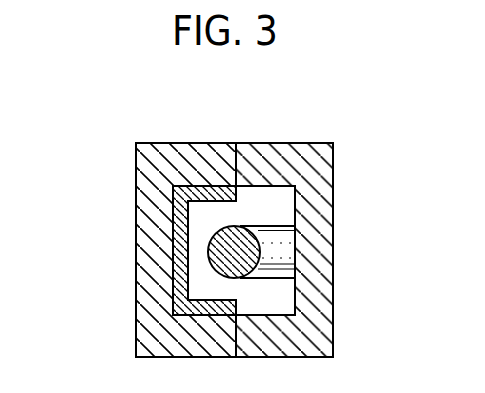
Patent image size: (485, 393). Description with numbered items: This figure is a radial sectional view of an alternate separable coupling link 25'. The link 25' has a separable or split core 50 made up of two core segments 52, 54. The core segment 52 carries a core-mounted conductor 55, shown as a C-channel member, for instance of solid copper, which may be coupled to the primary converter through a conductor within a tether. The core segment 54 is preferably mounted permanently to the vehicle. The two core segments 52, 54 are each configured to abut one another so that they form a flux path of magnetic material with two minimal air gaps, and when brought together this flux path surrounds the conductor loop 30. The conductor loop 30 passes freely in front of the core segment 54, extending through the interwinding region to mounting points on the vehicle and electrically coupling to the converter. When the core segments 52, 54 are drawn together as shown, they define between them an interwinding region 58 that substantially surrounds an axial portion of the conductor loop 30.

The link 25' is at (218, 218).
The conductor loop 30 is at (236, 243).
The split core 50 is at (231, 218).
The core segment 52 is at (148, 183).
The core segment 54 is at (331, 168).
The core-mounted conductor 55 is at (175, 300).
The interwinding region 58 is at (245, 214).